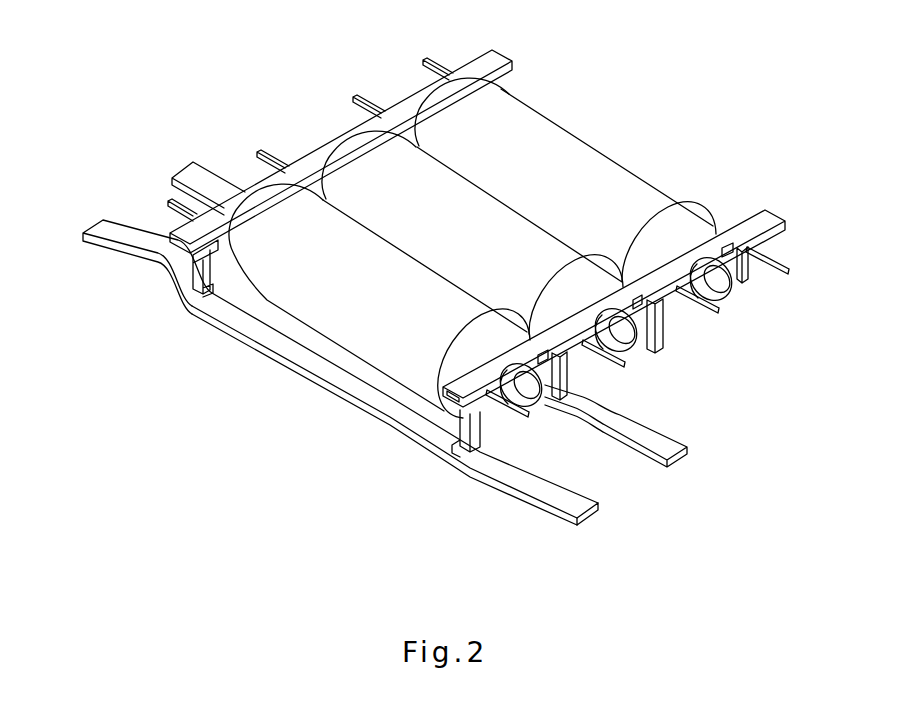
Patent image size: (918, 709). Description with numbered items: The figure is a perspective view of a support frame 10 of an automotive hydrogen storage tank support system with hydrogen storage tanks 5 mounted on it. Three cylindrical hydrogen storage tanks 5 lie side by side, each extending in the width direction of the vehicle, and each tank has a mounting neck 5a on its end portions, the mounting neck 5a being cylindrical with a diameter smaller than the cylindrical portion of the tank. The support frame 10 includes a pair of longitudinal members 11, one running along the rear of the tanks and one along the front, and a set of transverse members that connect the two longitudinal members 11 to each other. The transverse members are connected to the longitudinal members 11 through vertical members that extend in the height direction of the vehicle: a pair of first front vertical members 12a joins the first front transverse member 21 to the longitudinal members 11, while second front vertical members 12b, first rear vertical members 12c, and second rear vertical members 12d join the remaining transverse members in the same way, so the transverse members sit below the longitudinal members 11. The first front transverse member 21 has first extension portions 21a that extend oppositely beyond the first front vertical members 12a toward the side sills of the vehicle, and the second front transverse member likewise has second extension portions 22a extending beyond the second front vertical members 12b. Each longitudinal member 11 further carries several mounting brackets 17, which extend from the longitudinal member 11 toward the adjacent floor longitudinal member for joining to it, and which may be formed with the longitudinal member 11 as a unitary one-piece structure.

The hydrogen storage tank 5 is at (380, 267).
The mounting neck 5a is at (745, 298).
The support frame 10 is at (248, 363).
The longitudinal member 11 is at (333, 143).
The first front vertical member 12a is at (198, 277).
The second front vertical member 12b is at (570, 380).
The first rear vertical member 12c is at (658, 337).
The second rear vertical member 12d is at (743, 268).
The mounting bracket 17 is at (425, 57).
The first front transverse member 21 is at (347, 383).
The first extension portion 21a is at (123, 240).
The second extension portion 22a is at (192, 170).